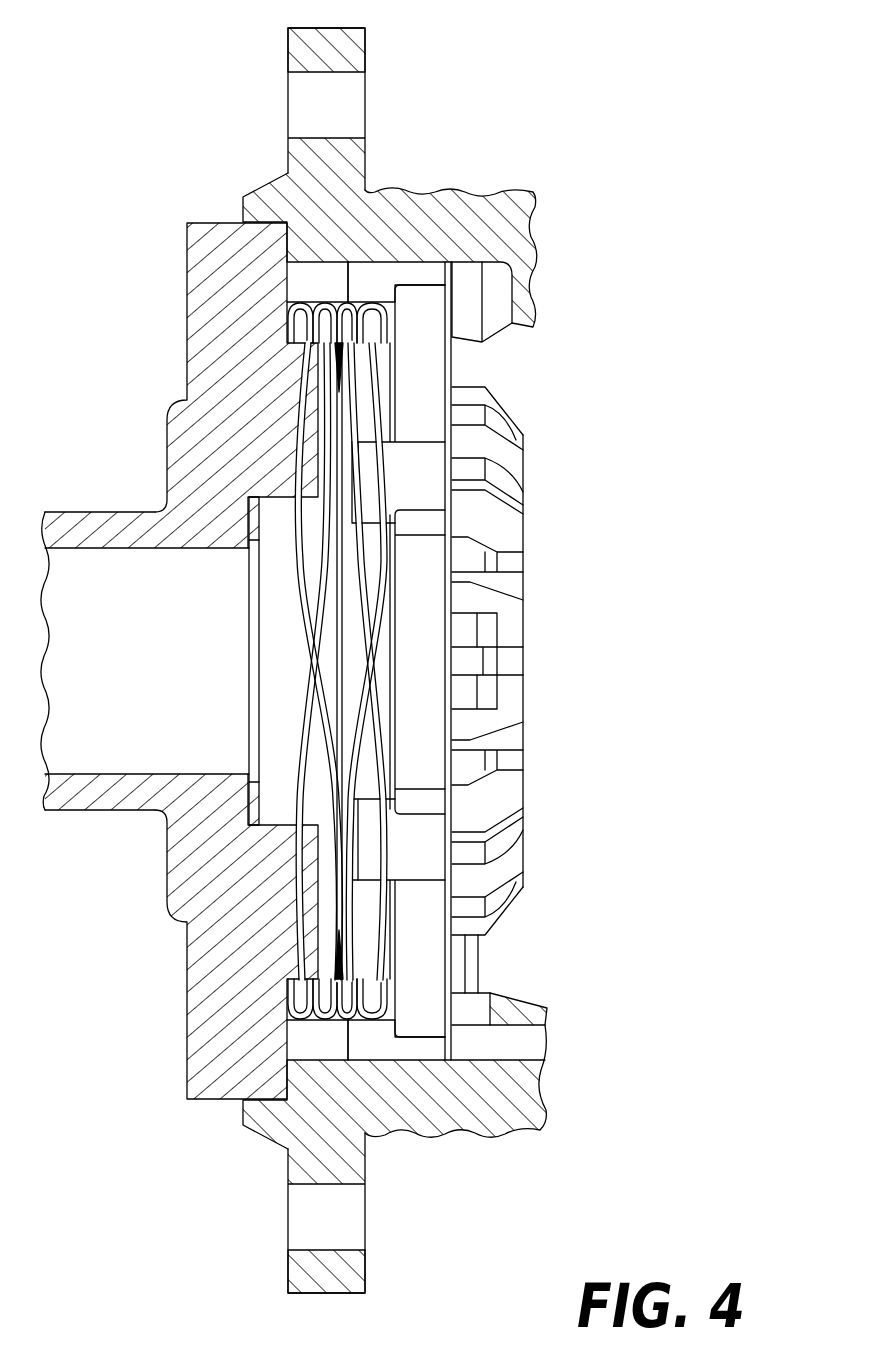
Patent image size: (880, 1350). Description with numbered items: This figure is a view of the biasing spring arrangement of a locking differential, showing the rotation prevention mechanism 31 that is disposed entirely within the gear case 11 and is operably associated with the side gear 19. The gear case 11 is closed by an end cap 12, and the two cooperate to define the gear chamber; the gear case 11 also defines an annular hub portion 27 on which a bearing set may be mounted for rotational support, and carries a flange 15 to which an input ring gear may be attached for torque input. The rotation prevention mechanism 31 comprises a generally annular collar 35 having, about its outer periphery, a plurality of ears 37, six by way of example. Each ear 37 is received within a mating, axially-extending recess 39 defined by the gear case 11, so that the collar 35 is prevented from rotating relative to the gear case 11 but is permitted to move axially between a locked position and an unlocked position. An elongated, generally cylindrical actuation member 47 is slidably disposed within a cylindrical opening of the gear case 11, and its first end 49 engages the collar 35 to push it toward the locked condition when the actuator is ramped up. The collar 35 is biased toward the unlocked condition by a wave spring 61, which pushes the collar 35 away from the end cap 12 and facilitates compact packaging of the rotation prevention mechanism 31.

The gear case 11 is at (490, 228).
The end cap 12 is at (225, 357).
The flange 15 is at (298, 46).
The side gear 19 is at (505, 453).
The annular hub portion 27 is at (117, 525).
The rotation prevention mechanism 31 is at (498, 353).
The collar 35 is at (420, 650).
The ears 37 is at (364, 280).
The recess 39 is at (312, 268).
The actuation member 47 is at (505, 1028).
The first end 49 is at (462, 1050).
The wave spring 61 is at (318, 662).